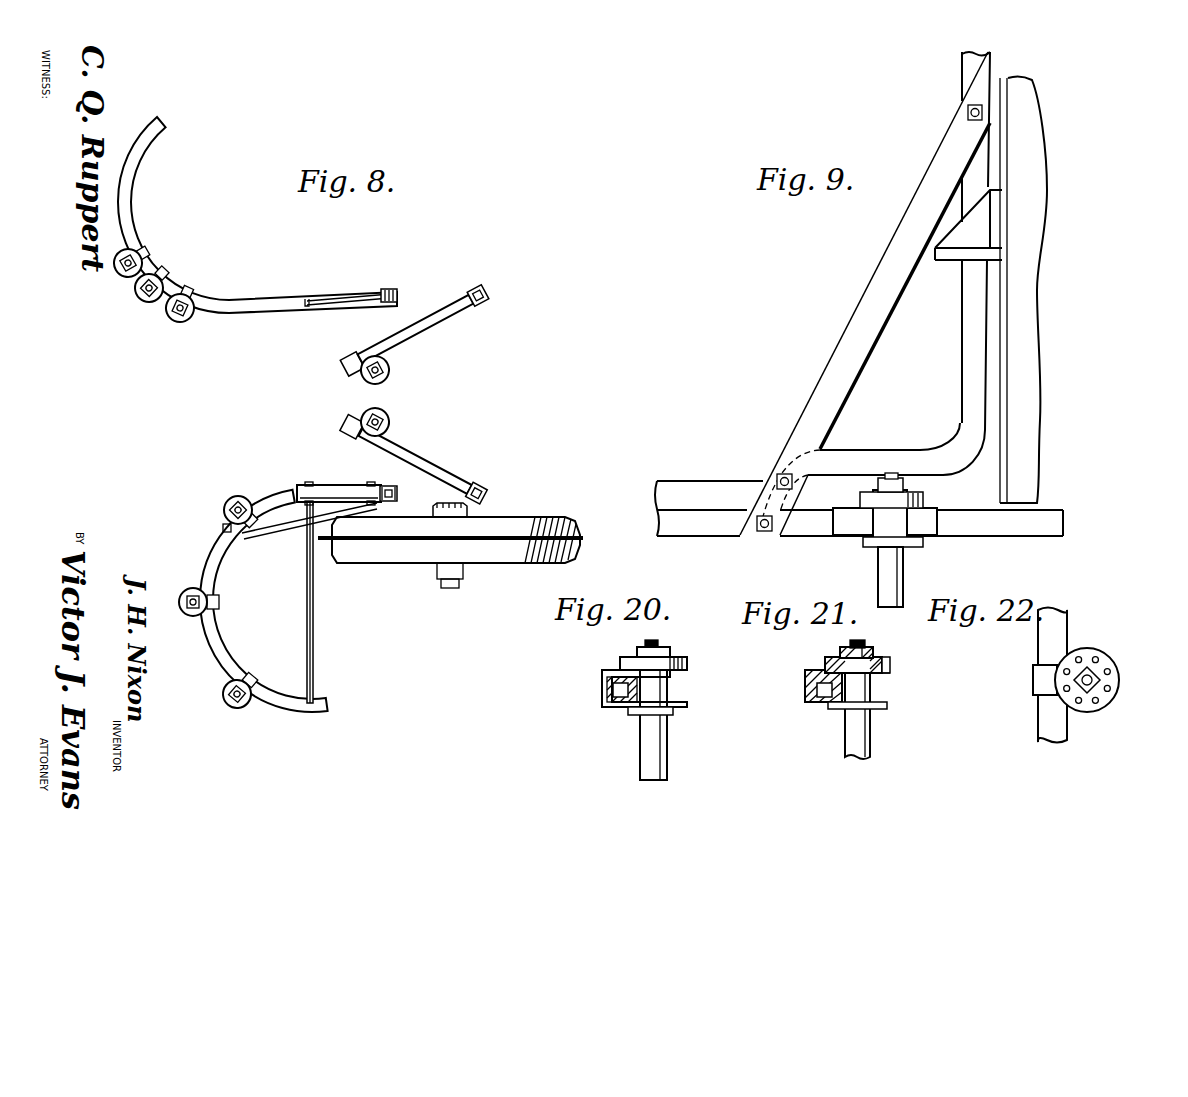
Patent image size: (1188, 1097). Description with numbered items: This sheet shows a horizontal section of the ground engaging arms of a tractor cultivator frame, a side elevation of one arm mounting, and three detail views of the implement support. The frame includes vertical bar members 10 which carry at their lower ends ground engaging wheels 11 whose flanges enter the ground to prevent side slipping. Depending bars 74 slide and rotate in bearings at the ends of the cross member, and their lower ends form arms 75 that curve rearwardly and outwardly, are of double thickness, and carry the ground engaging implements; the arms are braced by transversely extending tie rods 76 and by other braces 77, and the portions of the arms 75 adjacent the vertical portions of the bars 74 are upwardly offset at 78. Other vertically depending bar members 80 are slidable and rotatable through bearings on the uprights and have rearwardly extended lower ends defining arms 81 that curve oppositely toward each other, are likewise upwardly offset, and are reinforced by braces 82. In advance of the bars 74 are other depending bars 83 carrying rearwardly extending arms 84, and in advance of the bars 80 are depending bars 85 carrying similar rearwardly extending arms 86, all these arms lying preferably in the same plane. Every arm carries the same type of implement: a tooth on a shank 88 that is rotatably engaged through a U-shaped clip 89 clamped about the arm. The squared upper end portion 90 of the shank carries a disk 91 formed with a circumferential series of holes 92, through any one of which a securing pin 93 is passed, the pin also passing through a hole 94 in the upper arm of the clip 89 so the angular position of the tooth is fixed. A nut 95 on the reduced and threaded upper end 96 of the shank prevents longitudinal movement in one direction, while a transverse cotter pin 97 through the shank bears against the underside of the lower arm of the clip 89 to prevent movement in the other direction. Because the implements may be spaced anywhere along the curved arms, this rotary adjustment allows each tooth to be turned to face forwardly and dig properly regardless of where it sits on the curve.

In FIG. 8, the vertical bar member 10 is at (452, 503).
In FIG. 9, the vertical bar member 10 is at (1028, 320).
In FIG. 8, the ground engaging wheel 11 is at (557, 517).
In FIG. 8, the depending bar 74 is at (398, 495).
In FIG. 9, the depending bar 74 is at (970, 307).
In FIG. 8, the arm 75 is at (222, 557).
In FIG. 9, the arm 75 is at (703, 488).
In FIG. 8, the tie rod 76 is at (313, 590).
In FIG. 8, the brace 77 is at (283, 525).
In FIG. 9, the brace 77 is at (893, 240).
In FIG. 8, the upwardly offset portion 78 is at (323, 493).
In FIG. 9, the upwardly offset portion 78 is at (888, 458).
In FIG. 8, the vertically depending bar member 80 is at (394, 290).
In FIG. 8, the arm 81 is at (260, 310).
In FIG. 8, the brace 82 is at (340, 300).
In FIG. 8, the depending bar 83 is at (486, 490).
In FIG. 8, the arm 84 is at (412, 455).
In FIG. 8, the depending bar 85 is at (490, 295).
In FIG. 8, the arm 86 is at (453, 313).
In FIG. 9, the shank 88 is at (897, 577).
In FIG. 20, the shank 88 is at (655, 743).
In FIG. 21, the shank 88 is at (860, 743).
In FIG. 8, the U-shaped clip 89 is at (188, 288).
In FIG. 9, the U-shaped clip 89 is at (885, 518).
In FIG. 20, the U-shaped clip 89 is at (600, 690).
In FIG. 21, the U-shaped clip 89 is at (810, 708).
In FIG. 21, the squared upper end portion 90 is at (875, 652).
In FIG. 20, the disk 91 is at (623, 662).
In FIG. 21, the disk 91 is at (825, 665).
In FIG. 22, the disk 91 is at (1112, 690).
In FIG. 22, the hole 92 is at (1108, 668).
In FIG. 20, the securing pin 93 is at (683, 653).
In FIG. 21, the securing pin 93 is at (892, 658).
In FIG. 21, the hole 94 is at (890, 678).
In FIG. 20, the nut 95 is at (642, 652).
In FIG. 21, the nut 95 is at (843, 652).
In FIG. 22, the nut 95 is at (1092, 668).
In FIG. 20, the reduced and threaded upper end 96 is at (658, 645).
In FIG. 21, the reduced and threaded upper end 96 is at (858, 645).
In FIG. 22, the reduced and threaded upper end 96 is at (1089, 686).
In FIG. 20, the cotter pin 97 is at (632, 715).
In FIG. 21, the cotter pin 97 is at (887, 712).